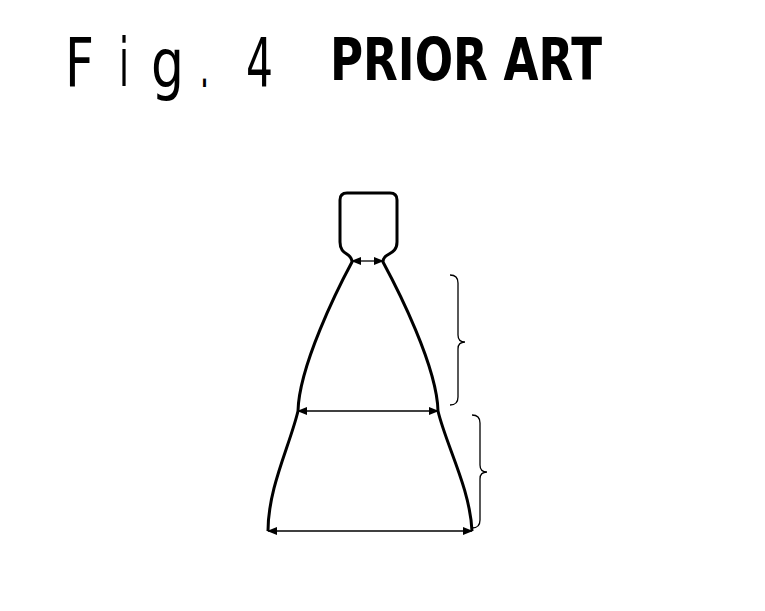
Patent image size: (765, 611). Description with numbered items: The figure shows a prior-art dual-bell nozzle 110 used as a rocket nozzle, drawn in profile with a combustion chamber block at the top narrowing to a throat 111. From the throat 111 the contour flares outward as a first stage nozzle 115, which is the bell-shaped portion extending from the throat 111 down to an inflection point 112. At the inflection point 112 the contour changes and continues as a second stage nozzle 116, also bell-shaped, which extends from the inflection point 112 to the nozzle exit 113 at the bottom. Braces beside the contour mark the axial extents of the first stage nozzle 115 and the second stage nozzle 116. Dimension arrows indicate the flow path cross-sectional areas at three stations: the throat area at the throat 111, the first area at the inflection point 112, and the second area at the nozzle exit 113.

The dual-bell nozzle 110 is at (541, 266).
The throat 111 is at (349, 259).
The inflection point 112 is at (298, 410).
The nozzle exit 113 is at (268, 530).
The first stage nozzle 115 is at (481, 340).
The second stage nozzle 116 is at (506, 471).